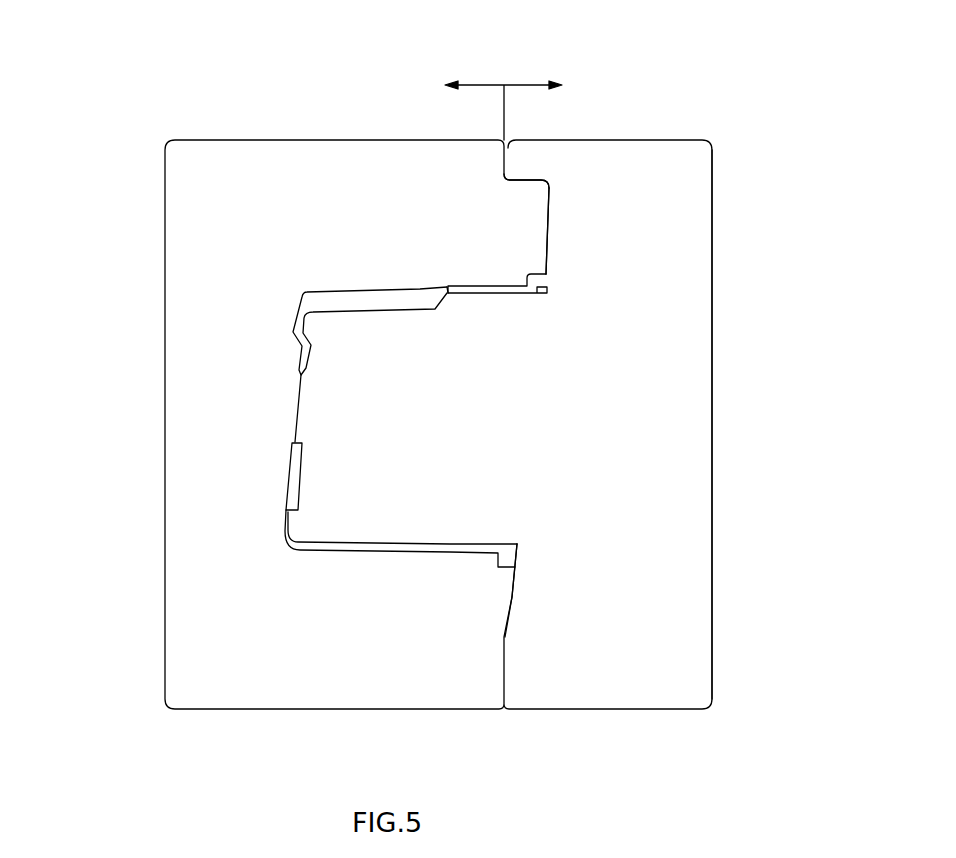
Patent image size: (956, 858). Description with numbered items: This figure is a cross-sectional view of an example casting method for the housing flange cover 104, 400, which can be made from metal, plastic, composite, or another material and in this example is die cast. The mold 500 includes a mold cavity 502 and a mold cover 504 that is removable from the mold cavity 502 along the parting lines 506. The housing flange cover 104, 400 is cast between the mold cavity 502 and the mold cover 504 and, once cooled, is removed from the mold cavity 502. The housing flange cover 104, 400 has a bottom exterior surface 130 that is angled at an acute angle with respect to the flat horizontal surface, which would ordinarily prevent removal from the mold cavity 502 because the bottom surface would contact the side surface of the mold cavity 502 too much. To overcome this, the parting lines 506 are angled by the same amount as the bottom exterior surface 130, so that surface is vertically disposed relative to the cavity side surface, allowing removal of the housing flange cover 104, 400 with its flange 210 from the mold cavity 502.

The mold 500 is at (718, 64).
The mold cavity 502 is at (455, 198).
The mold cover 504 is at (657, 300).
The parting lines 506 is at (552, 203).
The flange 210 is at (492, 295).
The bottom exterior surface 130 is at (448, 286).
The housing flange cover 104 is at (296, 480).
The housing flange cover 400 is at (285, 427).